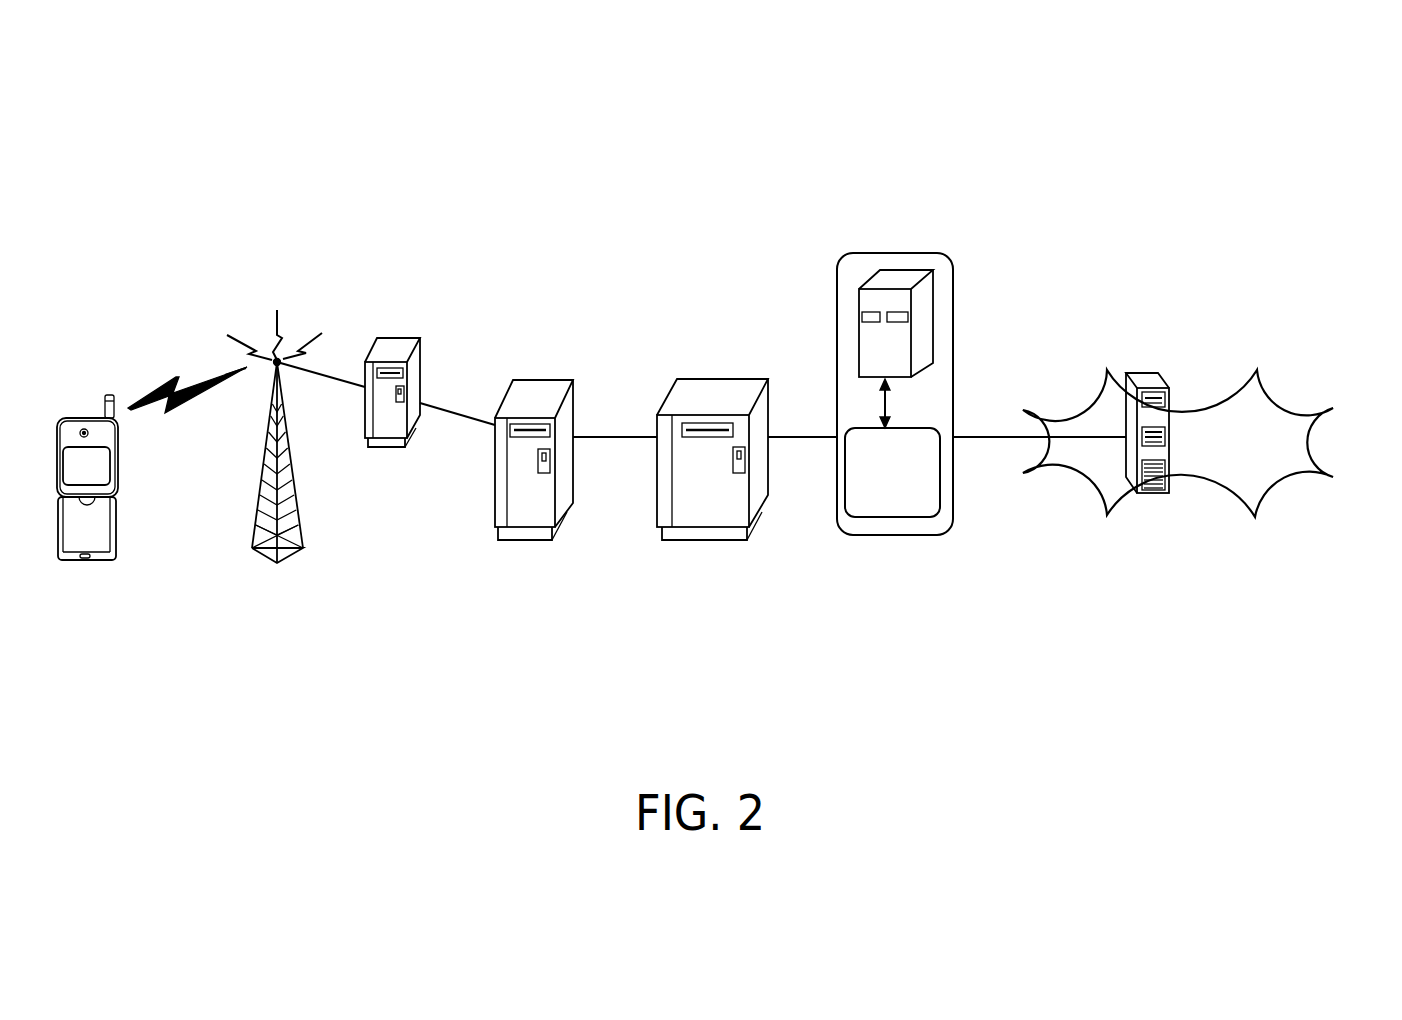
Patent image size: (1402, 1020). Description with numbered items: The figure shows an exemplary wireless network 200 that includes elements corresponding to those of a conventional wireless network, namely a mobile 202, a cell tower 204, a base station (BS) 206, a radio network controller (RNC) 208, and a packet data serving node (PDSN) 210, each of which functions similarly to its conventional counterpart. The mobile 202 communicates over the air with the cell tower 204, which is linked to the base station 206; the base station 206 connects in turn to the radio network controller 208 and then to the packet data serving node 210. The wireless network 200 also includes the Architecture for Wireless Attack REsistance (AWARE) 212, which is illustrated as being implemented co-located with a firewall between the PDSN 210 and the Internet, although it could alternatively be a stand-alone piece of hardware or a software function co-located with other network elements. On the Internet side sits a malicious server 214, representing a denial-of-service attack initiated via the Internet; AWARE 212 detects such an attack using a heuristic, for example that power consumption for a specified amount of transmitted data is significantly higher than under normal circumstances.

The wireless network 200 is at (170, 69).
The mobile 202 is at (83, 418).
The cell tower 204 is at (276, 565).
The base station (BS) 206 is at (393, 338).
The radio network controller (RNC) 208 is at (530, 380).
The packet data serving node (PDSN) 210 is at (715, 379).
The Architecture for Wireless Attack REsistance (AWARE) 212 is at (887, 253).
The malicious server 214 is at (1143, 372).